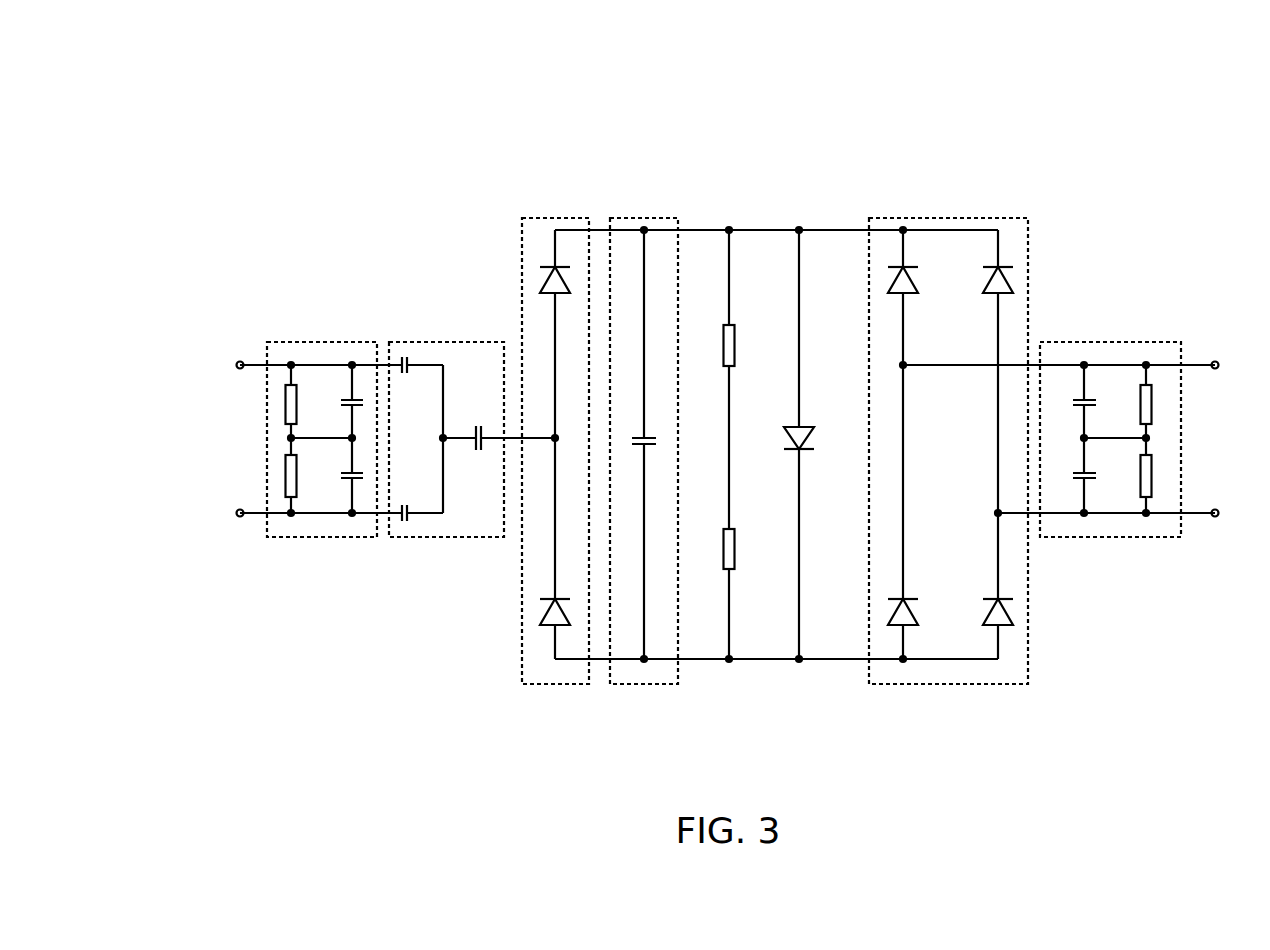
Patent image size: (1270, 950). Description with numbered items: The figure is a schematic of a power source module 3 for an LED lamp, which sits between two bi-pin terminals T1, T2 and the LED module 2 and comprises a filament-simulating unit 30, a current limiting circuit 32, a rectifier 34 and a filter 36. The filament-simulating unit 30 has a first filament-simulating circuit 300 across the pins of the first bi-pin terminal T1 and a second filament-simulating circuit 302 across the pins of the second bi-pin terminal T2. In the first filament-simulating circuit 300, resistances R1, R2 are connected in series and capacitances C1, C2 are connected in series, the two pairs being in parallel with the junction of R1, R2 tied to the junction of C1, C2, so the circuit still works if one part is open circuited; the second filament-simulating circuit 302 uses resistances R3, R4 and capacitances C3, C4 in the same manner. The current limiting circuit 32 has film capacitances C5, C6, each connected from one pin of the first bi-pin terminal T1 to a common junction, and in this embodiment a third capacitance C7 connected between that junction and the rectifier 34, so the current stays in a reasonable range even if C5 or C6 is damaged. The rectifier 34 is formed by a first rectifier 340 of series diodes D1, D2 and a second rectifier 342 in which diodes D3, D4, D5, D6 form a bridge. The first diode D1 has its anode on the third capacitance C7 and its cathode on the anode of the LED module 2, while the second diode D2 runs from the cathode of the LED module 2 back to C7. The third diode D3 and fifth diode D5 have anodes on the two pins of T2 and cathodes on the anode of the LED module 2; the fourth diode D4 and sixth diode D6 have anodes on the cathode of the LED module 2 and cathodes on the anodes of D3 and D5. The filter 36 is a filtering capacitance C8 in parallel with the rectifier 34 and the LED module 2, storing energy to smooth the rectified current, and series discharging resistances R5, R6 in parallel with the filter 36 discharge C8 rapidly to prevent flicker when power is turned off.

The power source module 3 is at (784, 101).
The filament-simulating unit 30 is at (327, 264).
The first filament-simulating circuit 300 is at (286, 341).
The second filament-simulating circuit 302 is at (1056, 341).
The current limiting circuit 32 is at (430, 341).
The rectifier 34 is at (524, 211).
The first rectifier 340 is at (549, 218).
The second rectifier 342 is at (980, 218).
The filter 36 is at (680, 218).
The LED module 2 is at (815, 427).
The first bi-pin terminal T1 is at (297, 439).
The second bi-pin terminal T2 is at (1219, 439).
The resistance R1 is at (296, 385).
The resistance R2 is at (289, 498).
The resistance R3 is at (1152, 390).
The resistance R4 is at (1142, 498).
The discharging resistance R5 is at (736, 343).
The discharging resistance R6 is at (736, 560).
The capacitance C1 is at (361, 398).
The capacitance C2 is at (344, 479).
The capacitance C3 is at (1094, 398).
The capacitance C4 is at (1078, 479).
The capacitance C5 is at (410, 357).
The capacitance C6 is at (409, 522).
The third capacitance C7 is at (482, 428).
The filtering capacitance C8 is at (645, 437).
The first diode D1 is at (566, 268).
The second diode D2 is at (548, 616).
The third diode D3 is at (902, 267).
The fourth diode D4 is at (893, 617).
The fifth diode D5 is at (985, 289).
The sixth diode D6 is at (987, 597).